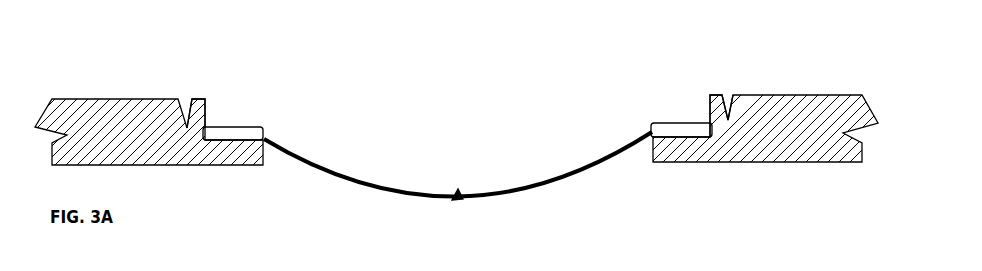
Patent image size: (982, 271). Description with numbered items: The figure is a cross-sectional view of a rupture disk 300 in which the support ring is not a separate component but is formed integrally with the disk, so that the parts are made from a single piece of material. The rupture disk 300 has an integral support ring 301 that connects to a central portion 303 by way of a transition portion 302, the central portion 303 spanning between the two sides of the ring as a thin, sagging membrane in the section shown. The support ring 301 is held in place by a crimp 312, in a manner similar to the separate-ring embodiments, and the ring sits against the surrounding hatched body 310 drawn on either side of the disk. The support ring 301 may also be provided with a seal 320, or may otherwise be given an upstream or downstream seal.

The rupture disk 300 is at (452, 200).
The integral support ring 301 is at (247, 126).
The transition portion 302 is at (650, 132).
The central portion 303 is at (587, 165).
The substrate 310 is at (118, 98).
The crimp 312 is at (203, 97).
The seal 320 is at (653, 163).